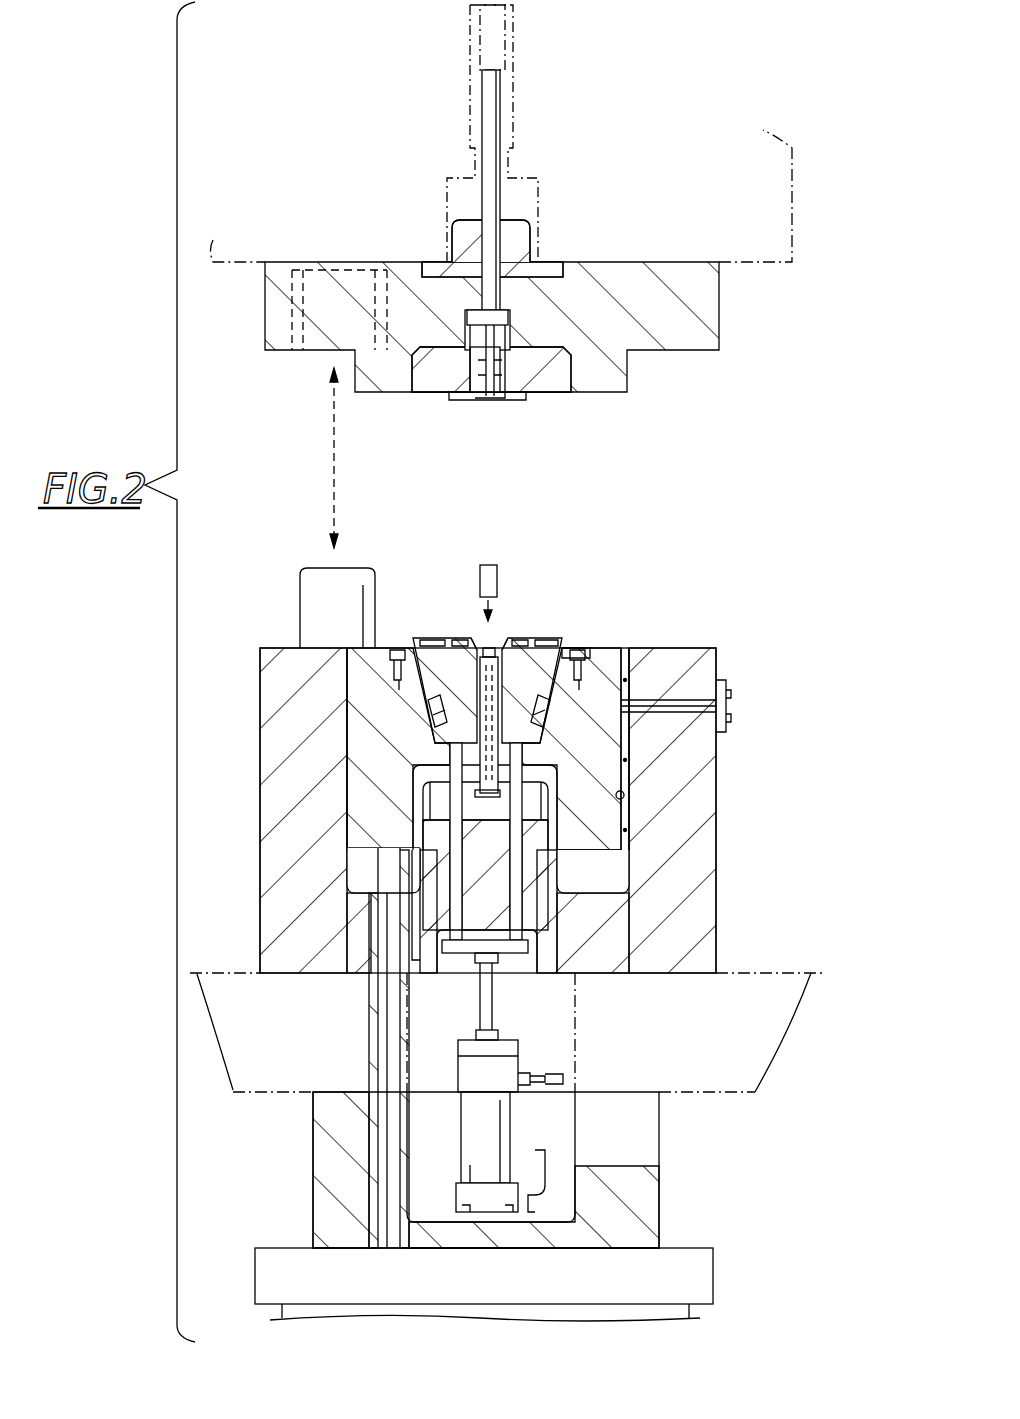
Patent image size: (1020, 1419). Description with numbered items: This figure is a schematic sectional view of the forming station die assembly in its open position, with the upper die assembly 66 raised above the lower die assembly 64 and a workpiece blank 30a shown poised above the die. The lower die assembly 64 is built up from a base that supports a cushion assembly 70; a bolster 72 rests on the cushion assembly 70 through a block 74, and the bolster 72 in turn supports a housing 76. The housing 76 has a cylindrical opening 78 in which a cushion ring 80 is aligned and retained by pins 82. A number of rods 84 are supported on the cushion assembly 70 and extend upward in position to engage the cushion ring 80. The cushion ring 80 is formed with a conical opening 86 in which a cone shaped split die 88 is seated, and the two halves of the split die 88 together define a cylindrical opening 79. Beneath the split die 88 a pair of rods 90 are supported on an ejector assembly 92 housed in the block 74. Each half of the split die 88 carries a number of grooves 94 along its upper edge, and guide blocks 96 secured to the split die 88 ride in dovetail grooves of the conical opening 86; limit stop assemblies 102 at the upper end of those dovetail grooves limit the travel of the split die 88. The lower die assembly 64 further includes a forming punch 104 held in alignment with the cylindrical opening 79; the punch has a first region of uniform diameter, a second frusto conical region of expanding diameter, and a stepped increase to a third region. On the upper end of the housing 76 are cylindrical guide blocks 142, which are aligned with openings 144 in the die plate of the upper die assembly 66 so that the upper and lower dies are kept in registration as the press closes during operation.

The workpiece blank 30a is at (492, 563).
The lower die assembly 64 is at (752, 817).
The upper die assembly 66 is at (770, 350).
The cushion assembly 70 is at (705, 1278).
The bolster 72 is at (729, 1090).
The block 74 is at (660, 1206).
The housing 76 is at (717, 877).
The cylindrical opening 78 is at (624, 795).
The cylindrical opening 79 is at (484, 645).
The cushion ring 80 is at (615, 645).
The pins 82 is at (687, 702).
The rods 84 is at (385, 1154).
The conical opening 86 is at (437, 750).
The split die 88 is at (424, 638).
The rods 90 is at (515, 912).
The ejector assembly 92 is at (497, 1139).
The grooves 94 is at (497, 645).
The guide blocks 96 is at (640, 660).
The limit stop assemblies 102 is at (570, 645).
The forming punch 104 is at (466, 694).
The cylindrical guide blocks 142 is at (305, 592).
The openings 144 is at (317, 348).